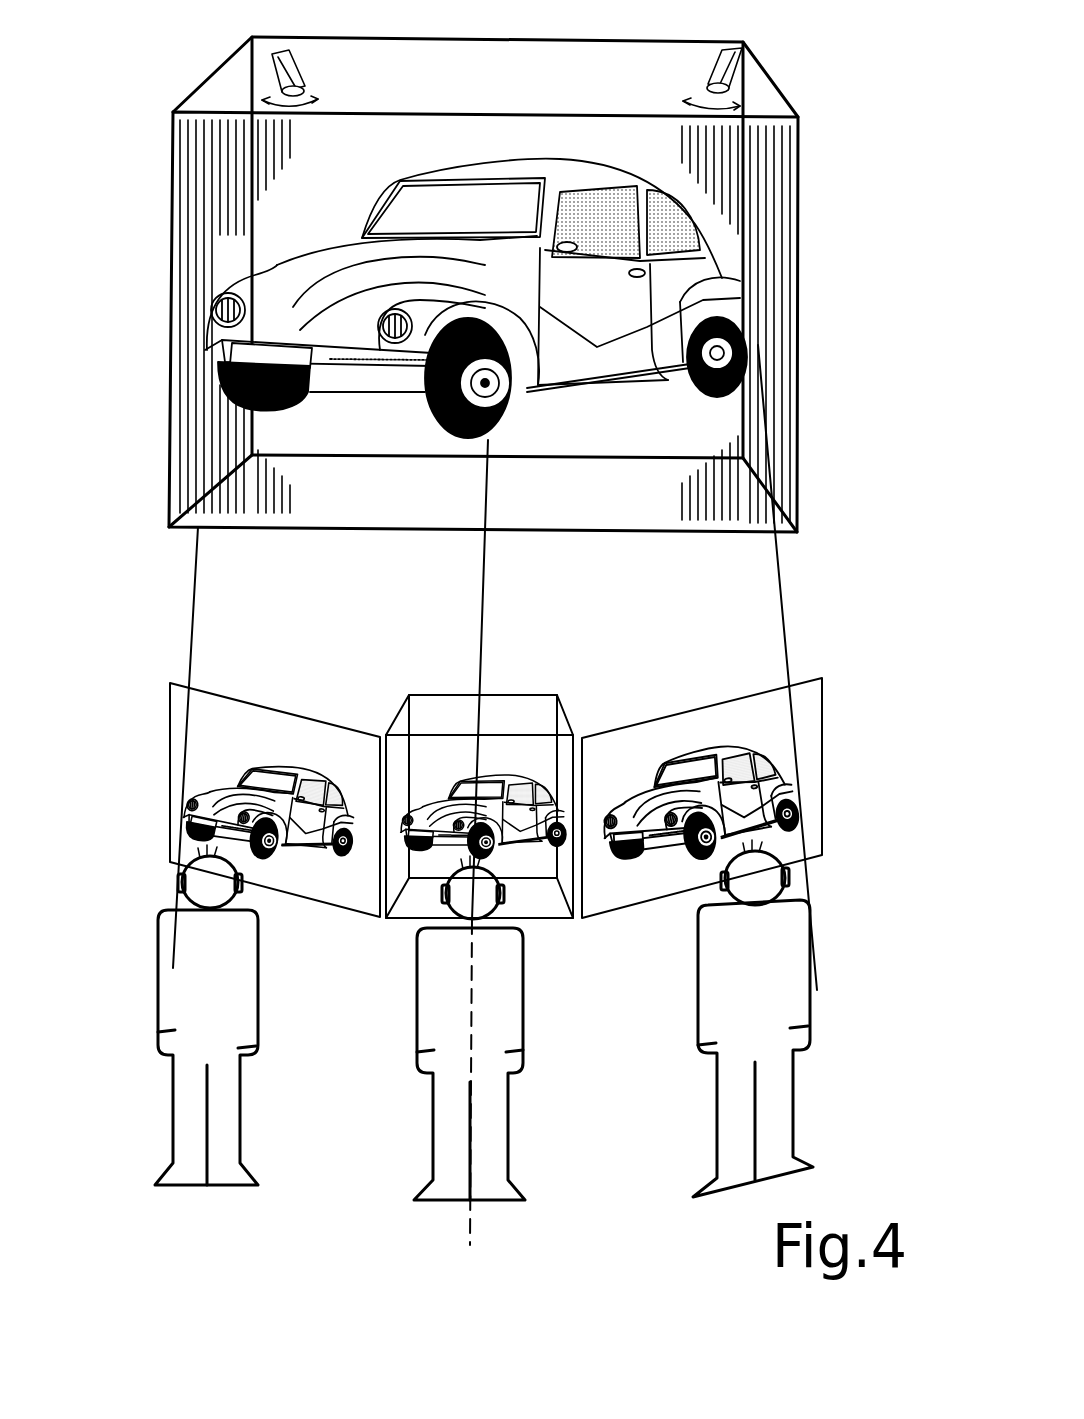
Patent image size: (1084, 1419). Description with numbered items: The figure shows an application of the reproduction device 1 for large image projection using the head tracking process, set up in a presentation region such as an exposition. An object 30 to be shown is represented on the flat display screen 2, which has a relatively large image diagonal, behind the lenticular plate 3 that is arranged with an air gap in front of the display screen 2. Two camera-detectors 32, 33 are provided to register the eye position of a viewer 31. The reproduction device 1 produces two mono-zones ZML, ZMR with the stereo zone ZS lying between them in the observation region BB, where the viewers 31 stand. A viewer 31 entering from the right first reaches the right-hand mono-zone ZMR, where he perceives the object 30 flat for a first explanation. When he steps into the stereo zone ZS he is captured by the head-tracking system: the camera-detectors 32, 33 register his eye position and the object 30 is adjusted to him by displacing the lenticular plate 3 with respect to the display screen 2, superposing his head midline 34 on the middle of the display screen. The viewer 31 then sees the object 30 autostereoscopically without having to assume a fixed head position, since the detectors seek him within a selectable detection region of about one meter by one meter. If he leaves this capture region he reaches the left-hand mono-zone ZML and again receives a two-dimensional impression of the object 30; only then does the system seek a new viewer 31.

The reproduction device 1 is at (350, 162).
The flat display screen 2 is at (242, 247).
The lenticular plate 3 is at (185, 332).
The object 30 is at (595, 317).
The viewer 31 is at (748, 1012).
The camera-detector 32 is at (278, 77).
The camera-detector 33 is at (745, 86).
The head midline 34 is at (470, 1210).
The left-hand mono-zone ZML is at (210, 722).
The right-hand mono-zone ZMR is at (760, 703).
The stereo zone ZS is at (540, 905).
The viewing area BB is at (607, 958).